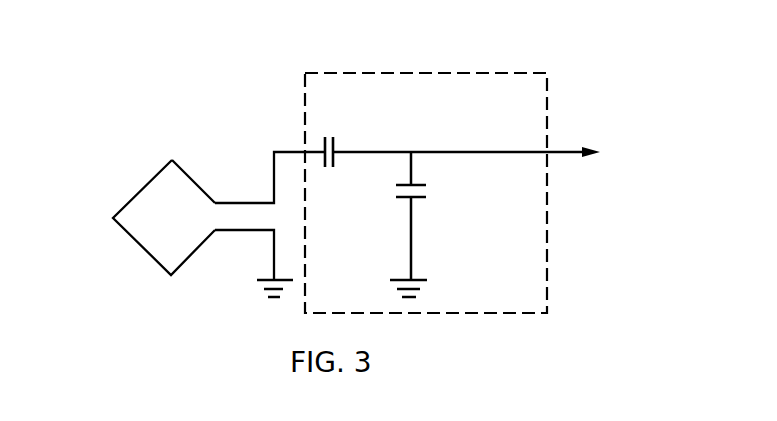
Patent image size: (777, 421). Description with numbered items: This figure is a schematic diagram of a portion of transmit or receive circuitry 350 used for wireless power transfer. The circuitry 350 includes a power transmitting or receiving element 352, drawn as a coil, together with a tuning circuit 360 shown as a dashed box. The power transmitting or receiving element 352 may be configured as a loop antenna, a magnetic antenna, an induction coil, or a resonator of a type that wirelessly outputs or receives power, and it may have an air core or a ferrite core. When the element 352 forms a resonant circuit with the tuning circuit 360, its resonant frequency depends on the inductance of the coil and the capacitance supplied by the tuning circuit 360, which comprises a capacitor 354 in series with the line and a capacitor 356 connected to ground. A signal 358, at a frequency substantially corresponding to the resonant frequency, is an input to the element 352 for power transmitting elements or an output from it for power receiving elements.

The transmit or receive circuitry 350 is at (189, 57).
The power transmitting or receiving element 352 is at (143, 187).
The capacitor 354 is at (337, 140).
The capacitor 356 is at (418, 199).
The signal 358 is at (445, 151).
The tuning circuit 360 is at (531, 73).